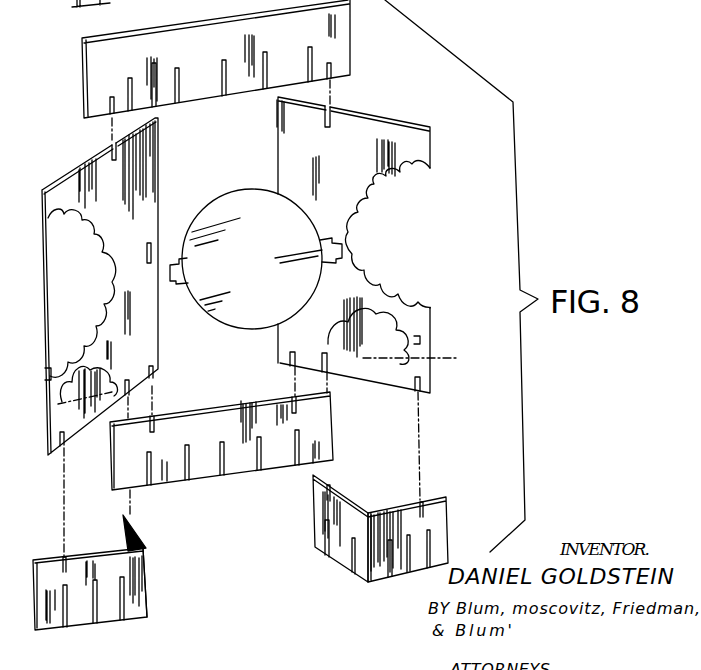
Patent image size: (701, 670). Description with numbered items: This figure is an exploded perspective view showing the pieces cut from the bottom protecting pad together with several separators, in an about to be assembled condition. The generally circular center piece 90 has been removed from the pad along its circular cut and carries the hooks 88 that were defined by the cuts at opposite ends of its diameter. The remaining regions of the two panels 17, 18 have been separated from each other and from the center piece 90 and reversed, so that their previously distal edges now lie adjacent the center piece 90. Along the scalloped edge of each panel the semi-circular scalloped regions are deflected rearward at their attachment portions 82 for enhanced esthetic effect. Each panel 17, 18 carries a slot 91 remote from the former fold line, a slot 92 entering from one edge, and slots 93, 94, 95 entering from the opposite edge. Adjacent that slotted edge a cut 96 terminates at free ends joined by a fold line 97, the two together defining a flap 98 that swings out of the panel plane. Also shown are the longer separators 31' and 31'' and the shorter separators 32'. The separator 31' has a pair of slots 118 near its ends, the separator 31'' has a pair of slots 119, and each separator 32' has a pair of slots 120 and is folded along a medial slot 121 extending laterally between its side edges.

The panel 17 is at (68, 182).
The panel 18 is at (385, 125).
The longer separator 31' is at (234, 59).
The longer separator 31'' is at (243, 441).
The shorter separator 32' is at (240, 325).
The attachment portion 82 is at (104, 328).
The hook 88 is at (178, 284).
The center piece 90 is at (232, 196).
The slot 91 is at (150, 250).
The slot 92 is at (116, 155).
The slot 93 is at (52, 454).
The slot 94 is at (126, 390).
The slot 95 is at (157, 379).
The cut 96 is at (74, 378).
The fold line 97 is at (66, 420).
The flap 98 is at (68, 398).
The slot 118 is at (110, 110).
The slot 119 is at (155, 424).
The slot 120 is at (67, 560).
The slot 121 is at (147, 592).